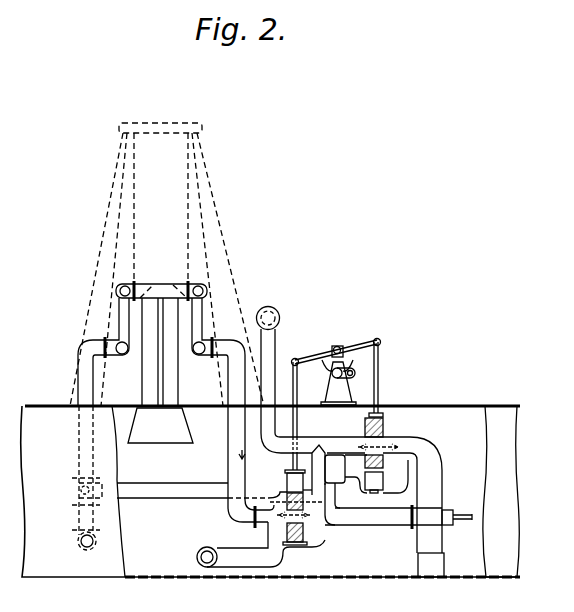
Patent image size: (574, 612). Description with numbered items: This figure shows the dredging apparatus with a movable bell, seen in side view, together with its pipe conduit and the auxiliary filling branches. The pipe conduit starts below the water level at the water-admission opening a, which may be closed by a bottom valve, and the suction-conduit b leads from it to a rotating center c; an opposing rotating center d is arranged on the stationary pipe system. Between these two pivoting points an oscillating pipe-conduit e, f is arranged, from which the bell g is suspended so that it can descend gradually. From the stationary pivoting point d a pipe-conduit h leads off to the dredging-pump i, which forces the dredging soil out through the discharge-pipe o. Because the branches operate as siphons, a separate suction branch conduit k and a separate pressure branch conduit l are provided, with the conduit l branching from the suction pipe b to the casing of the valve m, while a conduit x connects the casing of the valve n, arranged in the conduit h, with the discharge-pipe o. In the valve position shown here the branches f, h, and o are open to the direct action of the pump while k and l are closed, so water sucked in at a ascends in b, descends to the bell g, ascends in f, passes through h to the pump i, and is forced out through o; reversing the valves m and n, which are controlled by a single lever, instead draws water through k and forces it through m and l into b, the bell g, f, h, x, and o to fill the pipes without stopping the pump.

The water-admission opening a is at (78, 535).
The suction-conduit b is at (78, 448).
The rotating center c is at (104, 352).
The rotating center d is at (217, 352).
The oscillating pipe-conduit e is at (107, 330).
The oscillating pipe-conduit f is at (213, 328).
The bell g is at (160, 425).
The pipe-conduit h is at (373, 530).
The dredging-pump i is at (437, 494).
The suction branch conduit k is at (217, 552).
The pressure branch conduit l is at (175, 488).
The valve m is at (388, 443).
The valve n is at (304, 542).
The discharge-pipe o is at (275, 332).
The conduit x is at (307, 485).